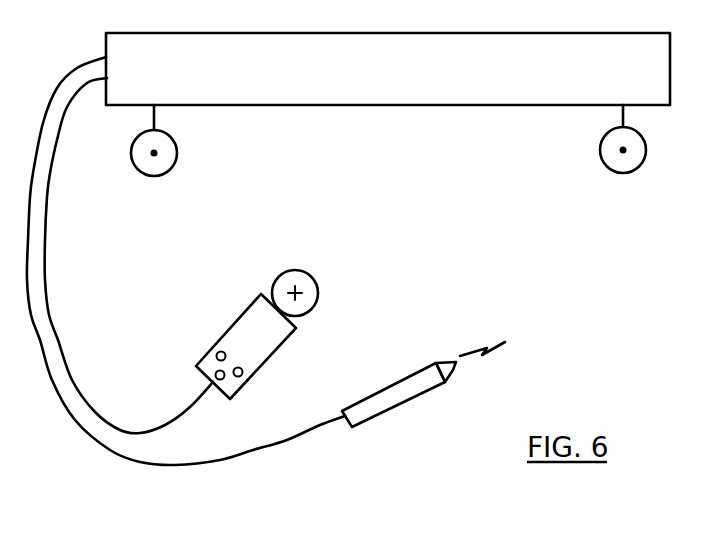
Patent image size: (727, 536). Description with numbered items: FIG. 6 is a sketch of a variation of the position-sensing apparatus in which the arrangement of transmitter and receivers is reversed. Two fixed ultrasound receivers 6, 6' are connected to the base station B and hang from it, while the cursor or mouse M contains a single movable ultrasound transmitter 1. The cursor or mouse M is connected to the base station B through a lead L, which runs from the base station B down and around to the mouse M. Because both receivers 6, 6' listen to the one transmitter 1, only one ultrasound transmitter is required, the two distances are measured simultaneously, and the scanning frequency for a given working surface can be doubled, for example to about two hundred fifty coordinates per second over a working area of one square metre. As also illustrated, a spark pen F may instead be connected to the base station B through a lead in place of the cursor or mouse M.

The base station B is at (336, 33).
The fixed ultrasound receiver 6 is at (172, 140).
The fixed ultrasound receiver 6' is at (604, 139).
The lead L is at (46, 280).
The cursor or mouse M is at (230, 318).
The ultrasound transmitter 1 is at (318, 280).
The spark pen F is at (386, 385).